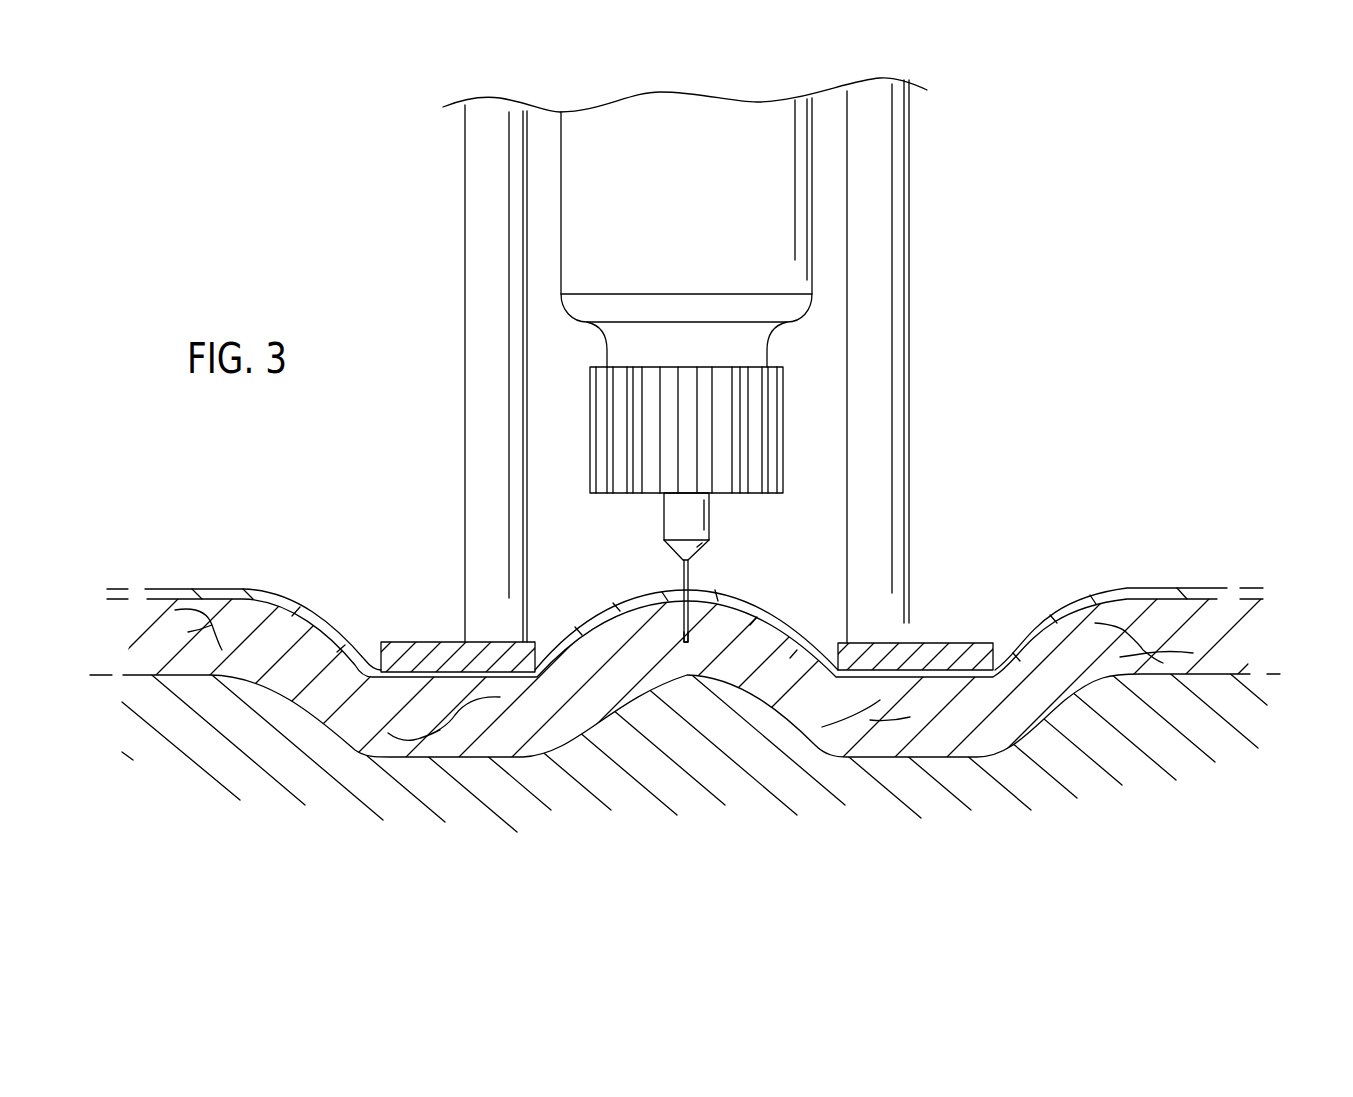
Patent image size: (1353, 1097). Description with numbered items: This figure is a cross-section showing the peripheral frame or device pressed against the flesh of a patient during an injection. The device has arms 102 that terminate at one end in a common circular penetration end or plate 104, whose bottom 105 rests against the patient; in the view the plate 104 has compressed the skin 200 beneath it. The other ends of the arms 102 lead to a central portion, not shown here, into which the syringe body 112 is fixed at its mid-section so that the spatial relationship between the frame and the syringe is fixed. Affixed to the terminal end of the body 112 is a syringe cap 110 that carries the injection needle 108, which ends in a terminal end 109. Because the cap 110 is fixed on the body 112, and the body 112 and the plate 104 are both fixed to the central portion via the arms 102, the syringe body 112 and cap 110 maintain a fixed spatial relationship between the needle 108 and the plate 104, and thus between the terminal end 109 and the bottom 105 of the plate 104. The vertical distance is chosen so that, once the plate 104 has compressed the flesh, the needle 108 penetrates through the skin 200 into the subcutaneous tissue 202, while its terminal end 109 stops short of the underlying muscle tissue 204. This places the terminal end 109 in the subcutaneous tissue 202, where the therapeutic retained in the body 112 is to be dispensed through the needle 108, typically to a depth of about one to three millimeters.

The arms 102 is at (878, 297).
The penetration end or plate 104 is at (692, 618).
The bottom of the penetration end or plate 105 is at (912, 667).
The injection needle 108 is at (687, 572).
The terminal end 109 is at (688, 645).
The syringe cap 110 is at (768, 467).
The syringe body 112 is at (765, 176).
The skin 200 is at (669, 643).
The subcutaneous tissue 202 is at (1167, 627).
The muscle tissue 204 is at (1210, 712).